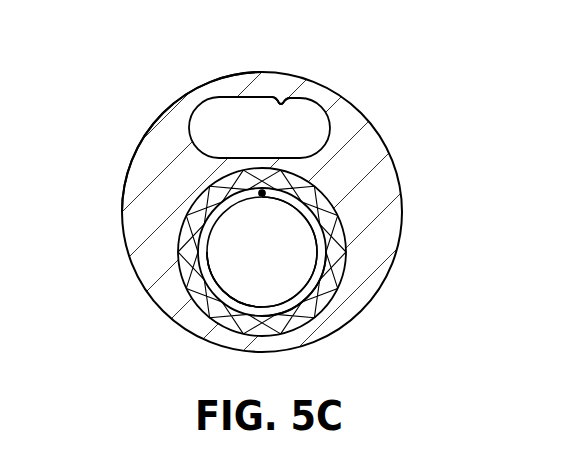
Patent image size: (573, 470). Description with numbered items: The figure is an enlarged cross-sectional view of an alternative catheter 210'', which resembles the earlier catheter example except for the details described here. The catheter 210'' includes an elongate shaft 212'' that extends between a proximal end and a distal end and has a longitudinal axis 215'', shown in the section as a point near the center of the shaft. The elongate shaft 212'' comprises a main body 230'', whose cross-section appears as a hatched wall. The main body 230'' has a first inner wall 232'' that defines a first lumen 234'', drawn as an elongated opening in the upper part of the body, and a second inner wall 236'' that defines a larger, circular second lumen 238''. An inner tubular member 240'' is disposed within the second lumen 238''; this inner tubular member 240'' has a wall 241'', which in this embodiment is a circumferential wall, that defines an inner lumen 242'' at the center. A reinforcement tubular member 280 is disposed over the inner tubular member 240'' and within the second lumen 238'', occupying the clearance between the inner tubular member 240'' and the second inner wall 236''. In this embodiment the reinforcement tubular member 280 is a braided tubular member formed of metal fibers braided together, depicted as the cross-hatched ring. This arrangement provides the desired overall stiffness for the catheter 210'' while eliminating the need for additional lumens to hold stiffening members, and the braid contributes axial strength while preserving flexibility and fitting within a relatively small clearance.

The catheter 210'' is at (250, 179).
The elongate shaft 212'' is at (162, 142).
The main body 230'' is at (286, 210).
The first inner wall 232'' is at (303, 69).
The first lumen 234'' is at (259, 127).
The longitudinal axis 215'' is at (289, 157).
The reinforcement tubular member 280 is at (332, 223).
The wall 241'' is at (355, 286).
The inner tubular member 240'' is at (318, 275).
The inner lumen 242'' is at (280, 224).
The second lumen 238'' is at (262, 279).
The second inner wall 236'' is at (175, 294).